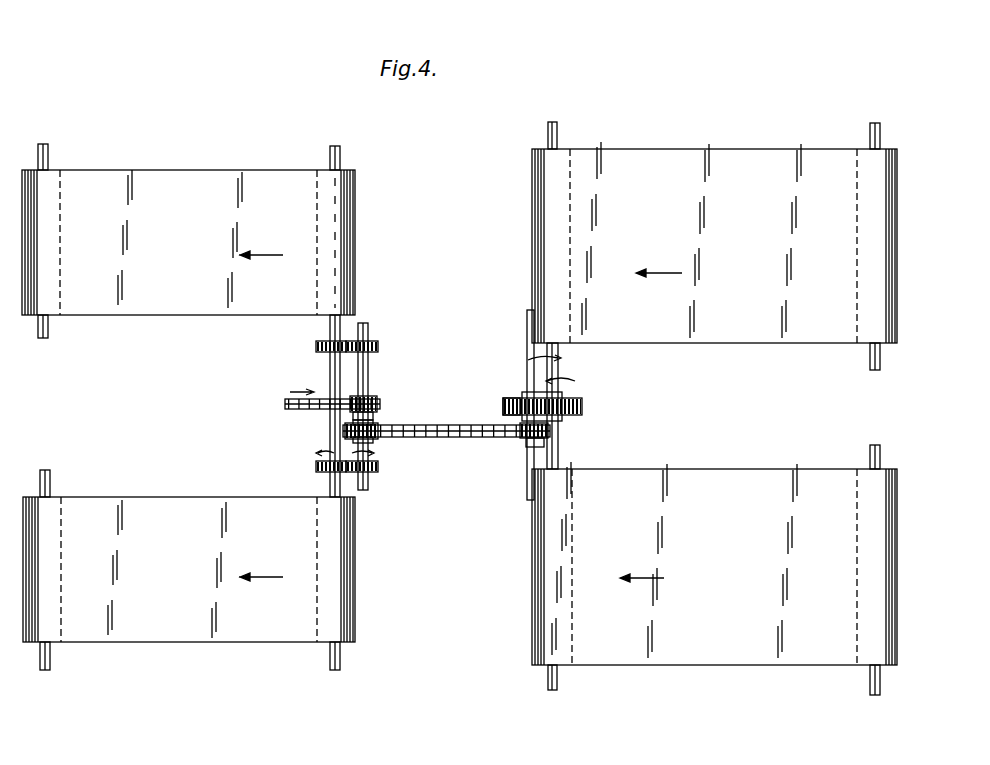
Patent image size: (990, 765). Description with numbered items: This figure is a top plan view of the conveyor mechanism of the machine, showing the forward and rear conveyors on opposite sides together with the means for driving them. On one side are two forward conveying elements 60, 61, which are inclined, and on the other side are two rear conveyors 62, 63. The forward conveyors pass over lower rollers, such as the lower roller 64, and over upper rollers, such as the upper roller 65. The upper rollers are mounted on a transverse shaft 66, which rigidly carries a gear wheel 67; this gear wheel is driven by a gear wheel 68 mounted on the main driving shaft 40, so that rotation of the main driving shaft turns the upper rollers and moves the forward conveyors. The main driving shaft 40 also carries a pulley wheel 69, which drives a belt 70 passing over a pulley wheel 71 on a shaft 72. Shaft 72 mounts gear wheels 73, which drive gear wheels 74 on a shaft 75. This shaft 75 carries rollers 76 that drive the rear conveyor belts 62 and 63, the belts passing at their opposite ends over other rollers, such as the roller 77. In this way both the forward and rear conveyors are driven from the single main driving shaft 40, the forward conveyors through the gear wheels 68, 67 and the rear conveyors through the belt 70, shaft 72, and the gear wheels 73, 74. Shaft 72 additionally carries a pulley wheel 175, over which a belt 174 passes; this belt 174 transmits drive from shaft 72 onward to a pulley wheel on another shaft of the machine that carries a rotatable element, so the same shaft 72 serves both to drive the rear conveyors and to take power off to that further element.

The main driving shaft 40 is at (526, 352).
The forward conveying element 60 is at (770, 346).
The forward conveying element 61 is at (745, 482).
The rear conveyor 62 is at (175, 318).
The rear conveyor 63 is at (166, 509).
The lower roller 64 is at (882, 150).
The upper roller 65 is at (558, 146).
The transverse shaft 66 is at (559, 368).
The gear wheel 67 is at (583, 406).
The gear wheel 68 is at (504, 400).
The pulley wheel 69 is at (524, 444).
The belt 70 is at (440, 438).
The pulley wheel 71 is at (378, 422).
The shaft 72 is at (369, 366).
The gear wheel 73 is at (378, 343).
The gear wheel 74 is at (316, 352).
The shaft 75 is at (329, 330).
The roller 76 is at (341, 167).
The roller 77 is at (50, 170).
The belt 174 is at (300, 412).
The pulley wheel 175 is at (377, 399).